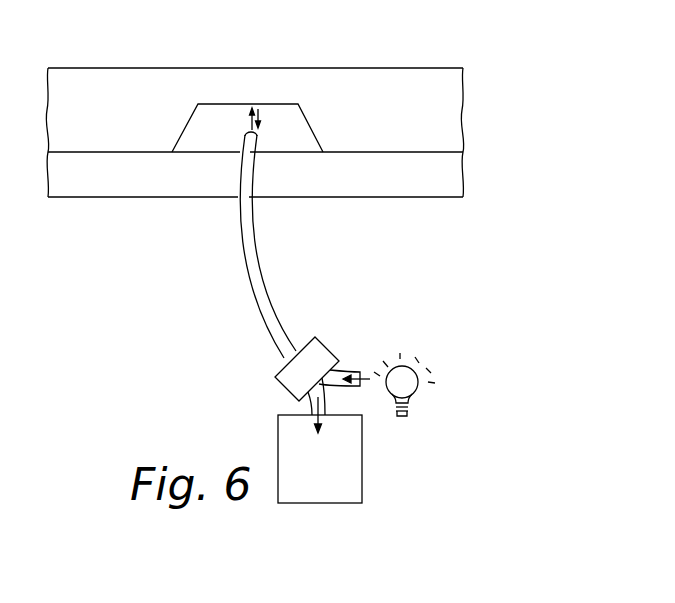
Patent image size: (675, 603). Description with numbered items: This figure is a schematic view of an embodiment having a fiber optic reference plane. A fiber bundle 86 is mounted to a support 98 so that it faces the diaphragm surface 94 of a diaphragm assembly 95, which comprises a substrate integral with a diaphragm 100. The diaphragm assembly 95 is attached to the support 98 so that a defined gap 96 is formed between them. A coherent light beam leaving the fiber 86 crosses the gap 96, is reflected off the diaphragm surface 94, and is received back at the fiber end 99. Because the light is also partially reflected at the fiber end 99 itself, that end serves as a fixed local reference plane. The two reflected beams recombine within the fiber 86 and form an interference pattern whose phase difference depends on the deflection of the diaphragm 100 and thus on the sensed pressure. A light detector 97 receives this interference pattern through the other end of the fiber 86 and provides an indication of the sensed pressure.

The fiber bundle 86 is at (251, 241).
The diaphragm surface 94 is at (231, 108).
The diaphragm assembly 95 is at (302, 105).
The defined gap 96 is at (302, 139).
The light detector 97 is at (331, 472).
The support 98 is at (402, 182).
The fiber end 99 is at (243, 142).
The diaphragm 100 is at (266, 75).